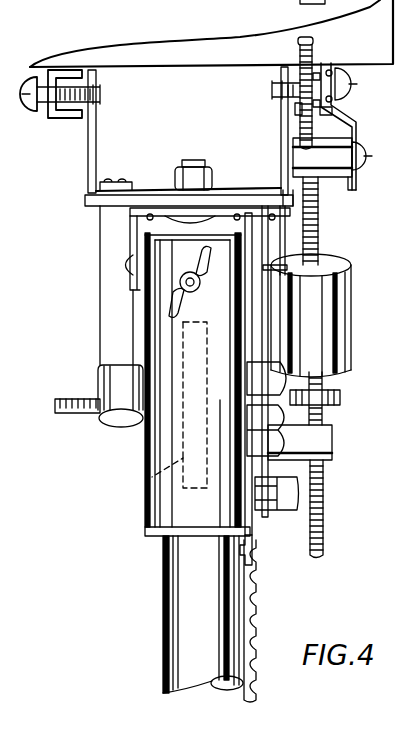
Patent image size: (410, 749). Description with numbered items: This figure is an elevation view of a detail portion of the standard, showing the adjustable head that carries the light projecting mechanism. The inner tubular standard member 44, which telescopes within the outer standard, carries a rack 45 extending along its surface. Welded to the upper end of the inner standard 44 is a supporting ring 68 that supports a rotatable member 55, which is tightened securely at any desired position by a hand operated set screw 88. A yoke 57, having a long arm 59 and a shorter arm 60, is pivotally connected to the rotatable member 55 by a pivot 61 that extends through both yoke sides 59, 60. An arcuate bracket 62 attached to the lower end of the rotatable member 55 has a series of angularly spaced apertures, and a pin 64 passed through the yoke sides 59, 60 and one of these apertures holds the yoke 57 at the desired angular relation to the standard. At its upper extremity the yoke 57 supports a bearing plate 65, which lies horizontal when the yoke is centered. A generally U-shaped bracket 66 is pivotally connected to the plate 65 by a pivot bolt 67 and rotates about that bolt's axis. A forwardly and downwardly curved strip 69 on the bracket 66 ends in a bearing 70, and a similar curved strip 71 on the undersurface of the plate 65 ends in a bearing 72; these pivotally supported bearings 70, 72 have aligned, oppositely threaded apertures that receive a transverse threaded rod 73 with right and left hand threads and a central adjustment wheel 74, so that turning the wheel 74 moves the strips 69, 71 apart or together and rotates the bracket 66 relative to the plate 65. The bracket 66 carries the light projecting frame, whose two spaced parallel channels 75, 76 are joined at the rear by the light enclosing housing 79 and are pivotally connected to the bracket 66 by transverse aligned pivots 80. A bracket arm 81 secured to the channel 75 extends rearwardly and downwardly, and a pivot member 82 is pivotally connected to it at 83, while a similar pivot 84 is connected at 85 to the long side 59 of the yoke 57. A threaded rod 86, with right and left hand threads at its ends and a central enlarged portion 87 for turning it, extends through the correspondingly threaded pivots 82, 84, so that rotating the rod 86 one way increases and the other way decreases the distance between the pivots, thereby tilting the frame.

The inner tubular standard member 44 is at (190, 612).
The rack 45 is at (256, 630).
The rotatable member 55 is at (178, 504).
The yoke 57 is at (258, 249).
The long arm 59 is at (263, 236).
The shorter arm 60 is at (130, 232).
The pivot 61 is at (124, 265).
The arcuate bracket 62 is at (254, 520).
The pin 64 is at (283, 508).
The plate 65 is at (85, 204).
The U-shaped bracket 66 is at (97, 140).
The pivot bolt 67 is at (199, 165).
The supporting ring 68 is at (155, 533).
The curved strip 69 is at (115, 322).
The bearing 70 is at (97, 379).
The curved strip 71 is at (289, 201).
The bearing 72 is at (277, 394).
The threaded rod 73 is at (125, 427).
The adjustment wheel 74 is at (150, 475).
The channel 75 is at (75, 122).
The channel 76 is at (342, 118).
The light enclosing housing 79 is at (192, 50).
The pivots 80 is at (101, 93).
The bracket arm 81 is at (351, 126).
The pivot member 82 is at (347, 180).
The pivot connection 83 is at (366, 158).
The pivot 84 is at (333, 441).
The pivot connection 85 is at (256, 452).
The threaded rod 86 is at (306, 40).
The central enlarged portion 87 is at (330, 313).
The set screw 88 is at (184, 278).